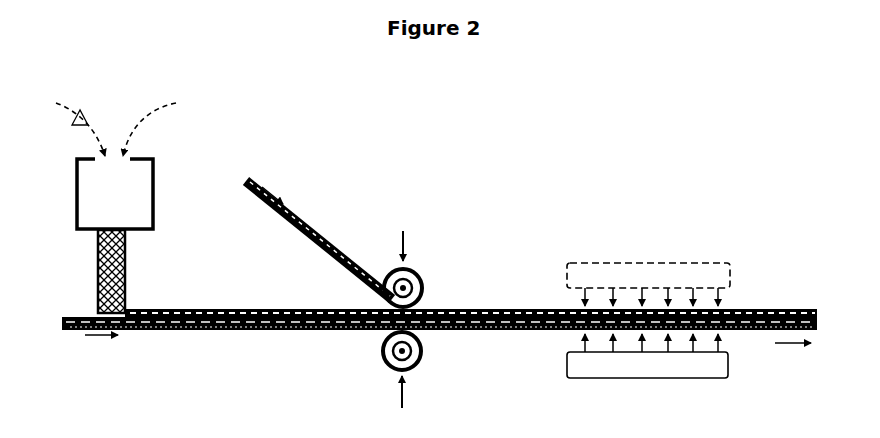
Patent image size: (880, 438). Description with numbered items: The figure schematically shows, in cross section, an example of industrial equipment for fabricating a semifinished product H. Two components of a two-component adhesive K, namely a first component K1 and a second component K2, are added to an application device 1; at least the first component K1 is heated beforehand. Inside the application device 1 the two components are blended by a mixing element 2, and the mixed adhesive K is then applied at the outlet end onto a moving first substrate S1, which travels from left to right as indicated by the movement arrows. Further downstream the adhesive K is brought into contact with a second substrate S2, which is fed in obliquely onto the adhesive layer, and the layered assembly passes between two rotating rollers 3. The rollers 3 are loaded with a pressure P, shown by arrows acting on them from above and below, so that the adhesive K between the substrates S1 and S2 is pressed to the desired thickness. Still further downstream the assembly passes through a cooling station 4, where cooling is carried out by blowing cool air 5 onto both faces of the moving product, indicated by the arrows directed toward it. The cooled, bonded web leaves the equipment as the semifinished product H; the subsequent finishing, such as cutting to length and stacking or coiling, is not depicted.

The application device 1 is at (153, 187).
The mixing element 2 is at (125, 270).
The roller 3 is at (428, 306).
The cooling station 4 is at (635, 258).
The cool air 5 is at (721, 303).
The adhesive K is at (213, 312).
The first component K1 is at (74, 119).
The second component K2 is at (158, 119).
The first substrate S1 is at (219, 332).
The second substrate S2 is at (337, 253).
The semifinished product H is at (806, 306).
The pressure P is at (402, 319).